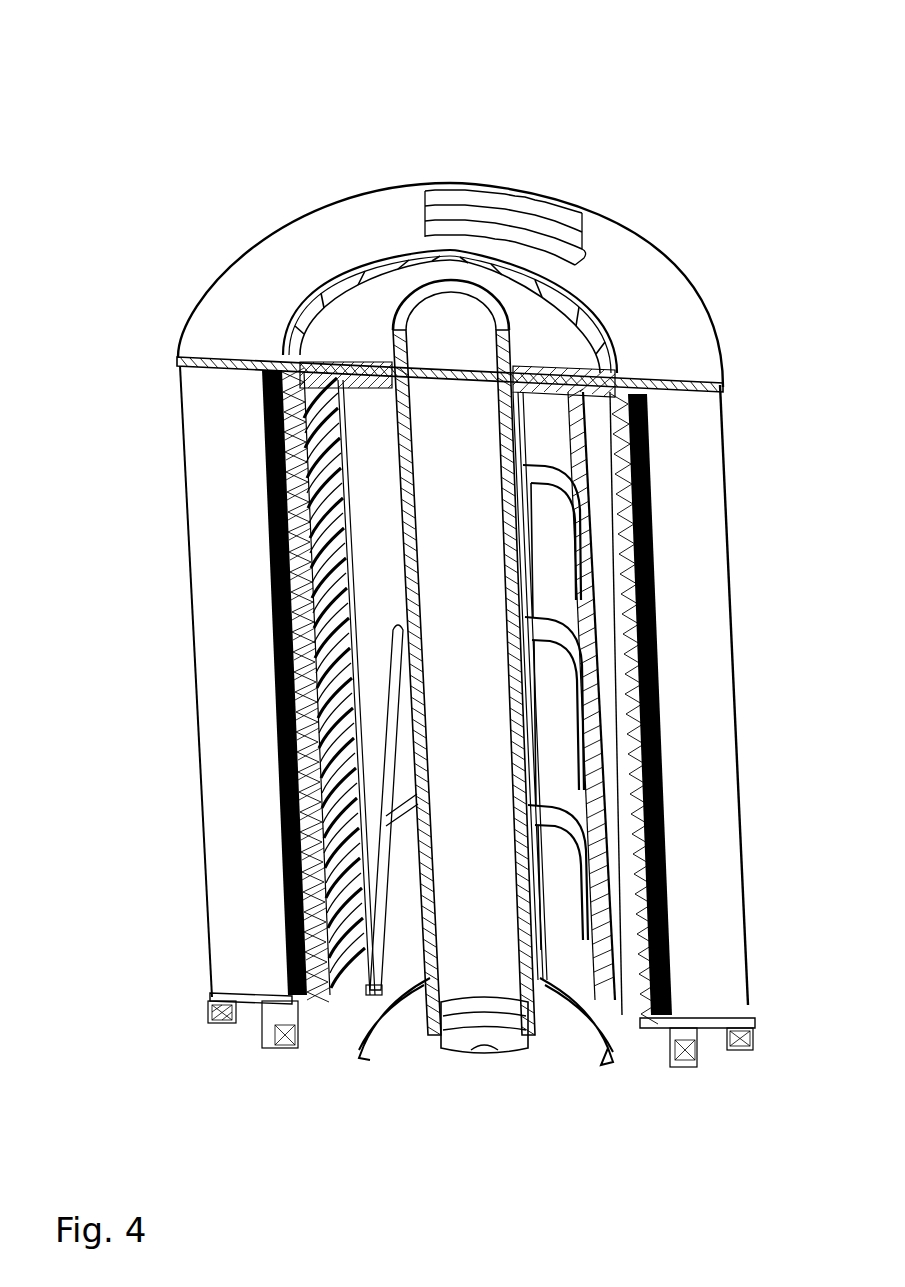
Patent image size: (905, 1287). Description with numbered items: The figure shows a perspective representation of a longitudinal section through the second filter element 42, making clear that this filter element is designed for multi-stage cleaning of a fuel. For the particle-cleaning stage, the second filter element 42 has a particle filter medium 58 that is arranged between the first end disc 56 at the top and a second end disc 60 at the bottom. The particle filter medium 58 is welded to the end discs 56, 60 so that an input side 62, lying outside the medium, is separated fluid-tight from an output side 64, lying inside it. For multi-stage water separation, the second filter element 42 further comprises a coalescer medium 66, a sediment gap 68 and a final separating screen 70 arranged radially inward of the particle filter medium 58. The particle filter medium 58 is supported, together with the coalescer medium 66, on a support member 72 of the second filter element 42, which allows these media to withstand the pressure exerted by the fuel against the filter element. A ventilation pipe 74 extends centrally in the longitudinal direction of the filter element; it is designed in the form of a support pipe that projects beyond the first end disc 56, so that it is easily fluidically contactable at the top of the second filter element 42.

The second filter element 42 is at (172, 70).
The first end disc 56 is at (257, 265).
The particle filter medium 58 is at (685, 505).
The second end disc 60 is at (253, 998).
The input side 62 is at (188, 706).
The output side 64 is at (342, 1008).
The coalescer medium 66 is at (652, 692).
The sediment gap 68 is at (620, 985).
The final separating screen 70 is at (587, 982).
The support member 72 is at (640, 1010).
The ventilation pipe 74 is at (400, 513).